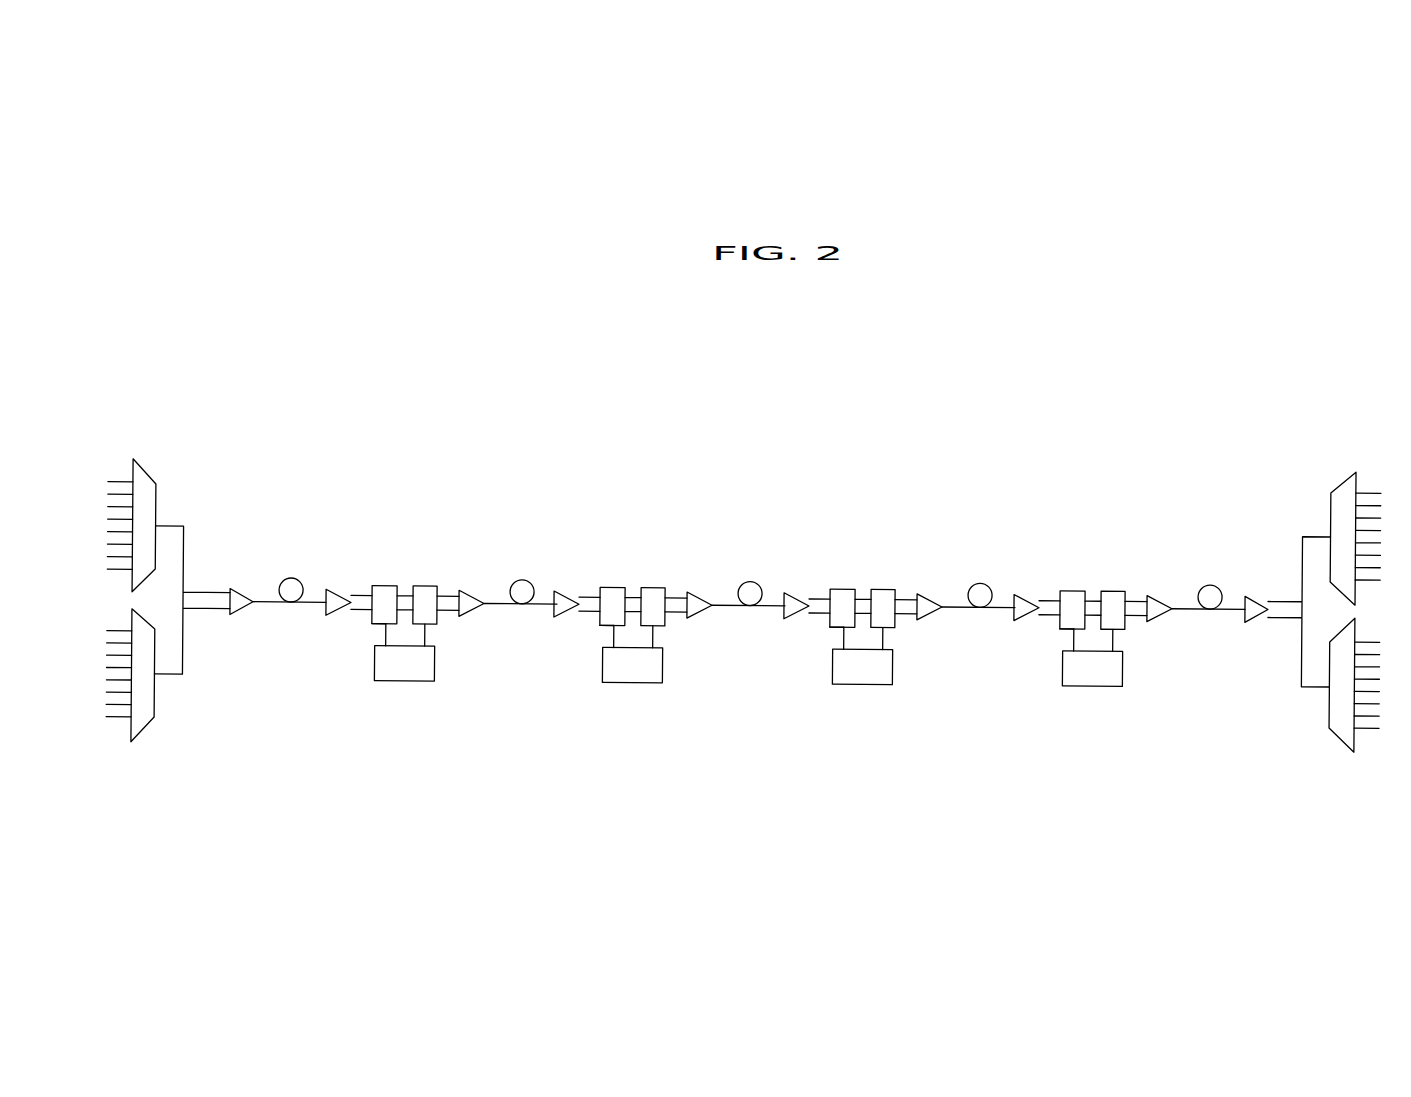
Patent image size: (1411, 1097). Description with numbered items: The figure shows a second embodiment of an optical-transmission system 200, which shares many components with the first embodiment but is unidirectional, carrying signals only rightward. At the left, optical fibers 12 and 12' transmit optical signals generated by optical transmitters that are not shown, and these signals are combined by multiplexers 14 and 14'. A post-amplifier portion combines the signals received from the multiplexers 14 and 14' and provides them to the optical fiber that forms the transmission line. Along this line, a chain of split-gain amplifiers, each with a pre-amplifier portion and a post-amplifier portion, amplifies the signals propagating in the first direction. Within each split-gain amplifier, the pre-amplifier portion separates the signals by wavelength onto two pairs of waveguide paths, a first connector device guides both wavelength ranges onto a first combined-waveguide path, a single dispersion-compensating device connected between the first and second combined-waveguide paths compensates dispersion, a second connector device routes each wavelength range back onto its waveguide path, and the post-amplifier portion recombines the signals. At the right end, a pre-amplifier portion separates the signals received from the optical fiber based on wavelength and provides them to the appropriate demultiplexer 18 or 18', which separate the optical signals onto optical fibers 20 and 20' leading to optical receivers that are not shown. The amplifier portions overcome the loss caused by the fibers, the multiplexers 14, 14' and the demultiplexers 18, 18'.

The optical-transmission system 200 is at (756, 390).
The optical fiber 12 is at (113, 493).
The multiplexer 14 is at (160, 507).
The optical fiber 12' is at (114, 707).
The multiplexer 14' is at (159, 696).
The demultiplexer 18 is at (1316, 527).
The optical fiber 20 is at (1383, 510).
The demultiplexer 18' is at (1317, 714).
The optical fiber 20' is at (1373, 725).